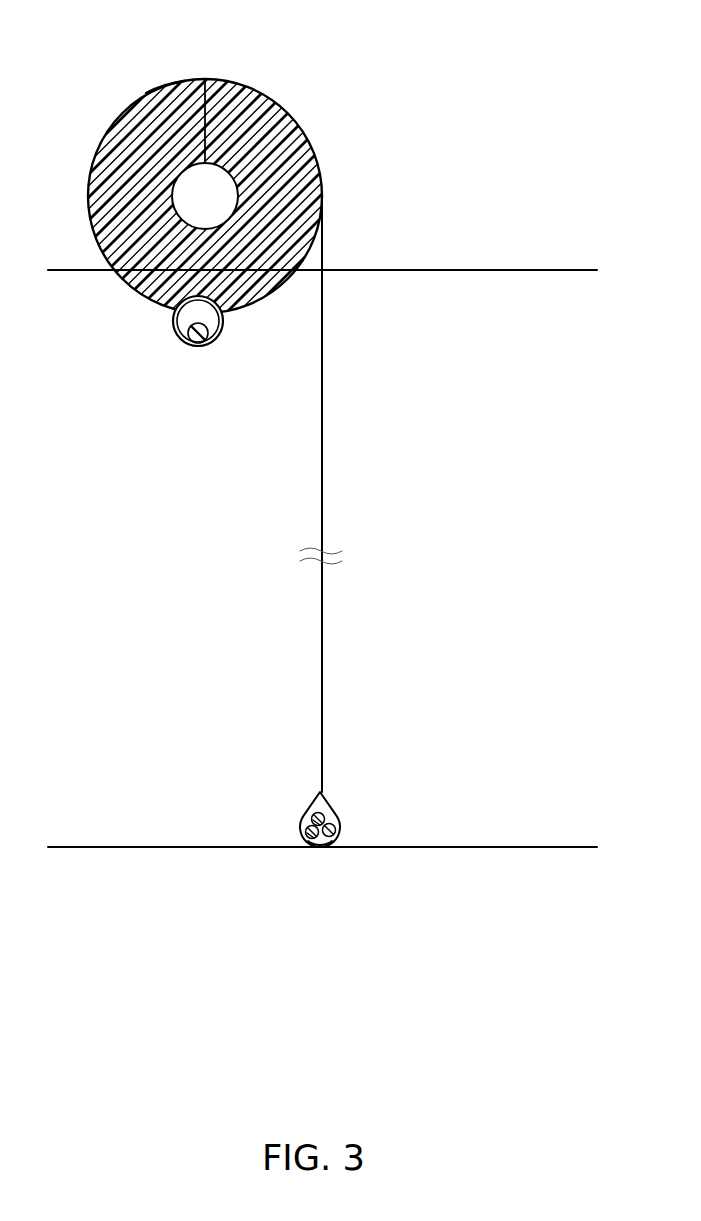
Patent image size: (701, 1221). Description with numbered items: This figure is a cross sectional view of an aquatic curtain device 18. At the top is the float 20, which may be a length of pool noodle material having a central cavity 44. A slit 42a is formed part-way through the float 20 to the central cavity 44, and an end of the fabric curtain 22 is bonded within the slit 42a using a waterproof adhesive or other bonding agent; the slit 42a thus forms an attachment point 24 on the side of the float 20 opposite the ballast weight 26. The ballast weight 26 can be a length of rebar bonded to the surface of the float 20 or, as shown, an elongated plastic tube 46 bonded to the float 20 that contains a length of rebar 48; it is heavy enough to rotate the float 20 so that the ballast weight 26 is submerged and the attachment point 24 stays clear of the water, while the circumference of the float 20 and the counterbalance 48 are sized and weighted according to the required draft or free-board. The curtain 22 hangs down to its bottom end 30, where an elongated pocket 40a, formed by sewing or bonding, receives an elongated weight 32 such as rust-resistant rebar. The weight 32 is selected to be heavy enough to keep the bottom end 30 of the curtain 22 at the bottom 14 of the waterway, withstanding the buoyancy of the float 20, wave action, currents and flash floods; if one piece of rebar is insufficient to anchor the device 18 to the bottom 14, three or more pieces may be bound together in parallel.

The bottom 14 is at (150, 847).
The aquatic curtain device 18 is at (317, 85).
The float 20 is at (318, 158).
The curtain 22 is at (322, 395).
The attachment point 24 is at (205, 80).
The ballast weight 26 is at (190, 355).
The bottom end 30 is at (363, 818).
The weight 32 is at (325, 848).
The elongated pocket 40a is at (330, 800).
The slit 42a is at (197, 92).
The central cavity 44 is at (178, 184).
The elongated plastic tube 46 is at (177, 331).
The rebar 48 is at (197, 341).